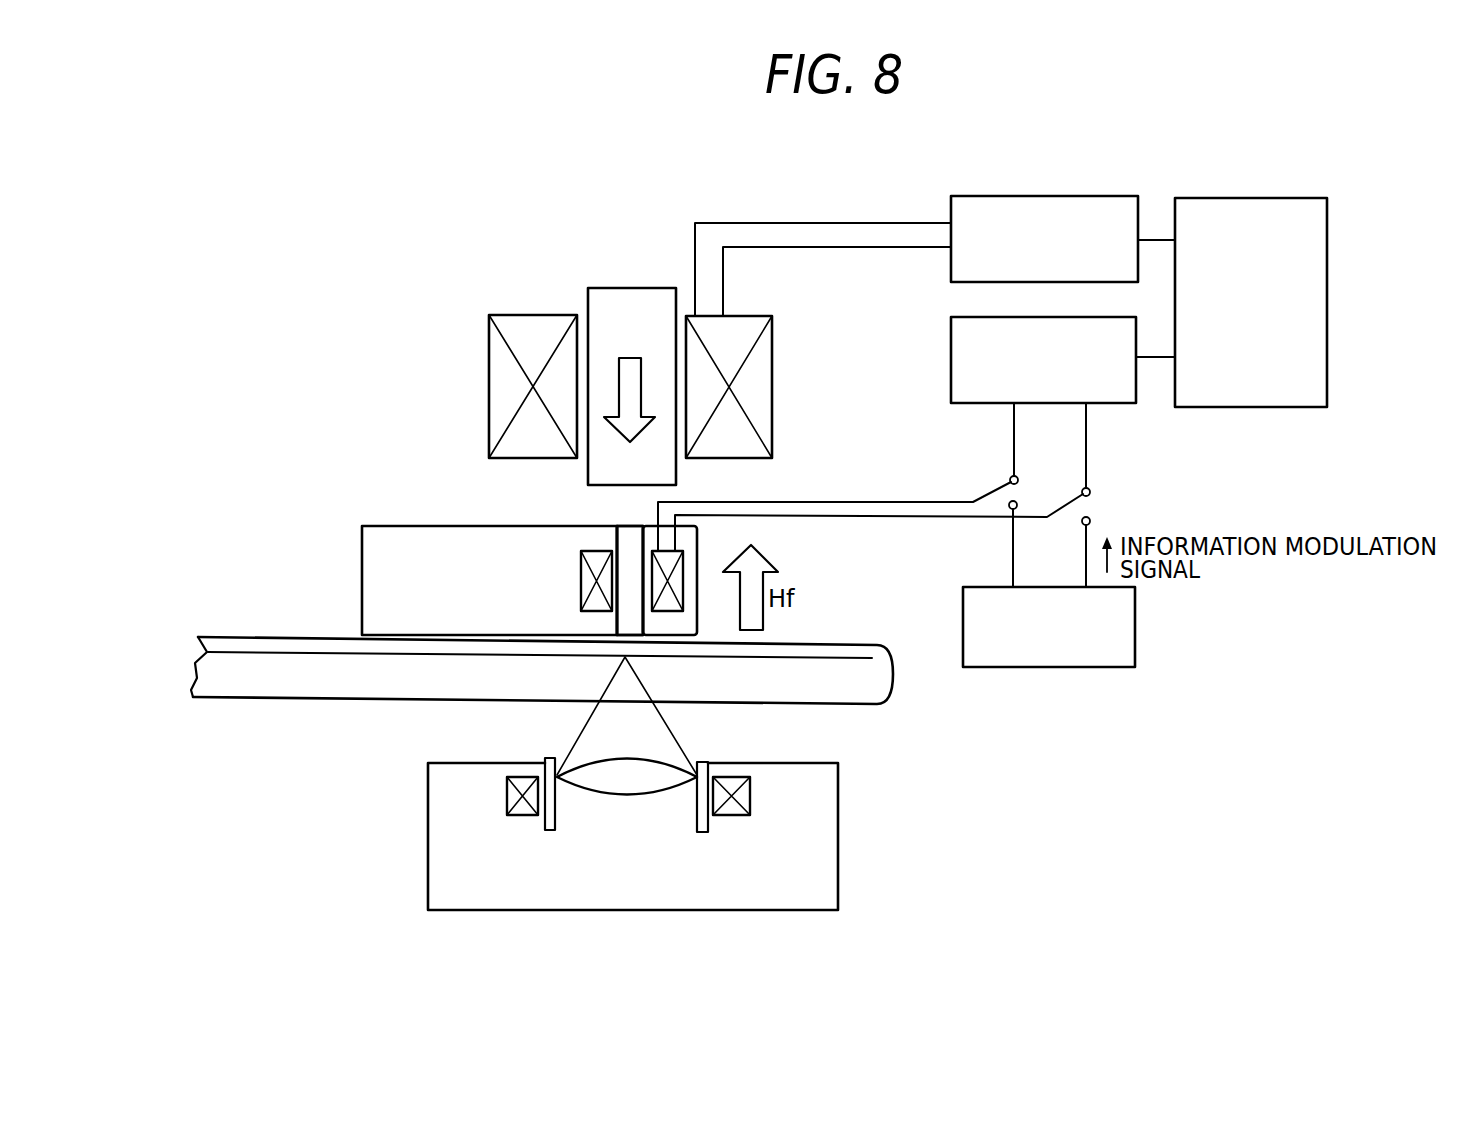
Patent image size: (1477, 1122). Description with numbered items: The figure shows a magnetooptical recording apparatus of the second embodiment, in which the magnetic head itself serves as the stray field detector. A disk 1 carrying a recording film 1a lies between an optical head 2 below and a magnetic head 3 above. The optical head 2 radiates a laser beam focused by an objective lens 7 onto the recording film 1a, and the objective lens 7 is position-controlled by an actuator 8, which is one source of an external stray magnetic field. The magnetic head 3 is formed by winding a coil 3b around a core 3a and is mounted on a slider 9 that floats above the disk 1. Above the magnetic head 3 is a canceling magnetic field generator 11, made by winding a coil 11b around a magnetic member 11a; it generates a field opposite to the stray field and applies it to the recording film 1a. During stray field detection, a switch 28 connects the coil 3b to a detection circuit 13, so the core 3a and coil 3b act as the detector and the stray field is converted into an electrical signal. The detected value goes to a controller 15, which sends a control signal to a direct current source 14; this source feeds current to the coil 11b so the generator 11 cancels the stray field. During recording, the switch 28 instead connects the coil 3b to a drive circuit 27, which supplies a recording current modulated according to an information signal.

The disk 1 is at (542, 690).
The recording film 1a is at (262, 650).
The optical head 2 is at (428, 803).
The magnetic head 3 is at (586, 580).
The core 3a is at (625, 540).
The coil 3b is at (503, 538).
The objective lens 7 is at (658, 775).
The actuator 8 is at (505, 800).
The slider 9 is at (360, 566).
The canceling magnetic field generator 11 is at (630, 330).
The magnetic member 11a is at (632, 354).
The coil 11b is at (515, 314).
The detection circuit 13 is at (1090, 317).
The direct current source 14 is at (1091, 196).
The controller 15 is at (1280, 198).
The drive circuit 27 is at (1137, 618).
The switch 28 is at (1097, 509).